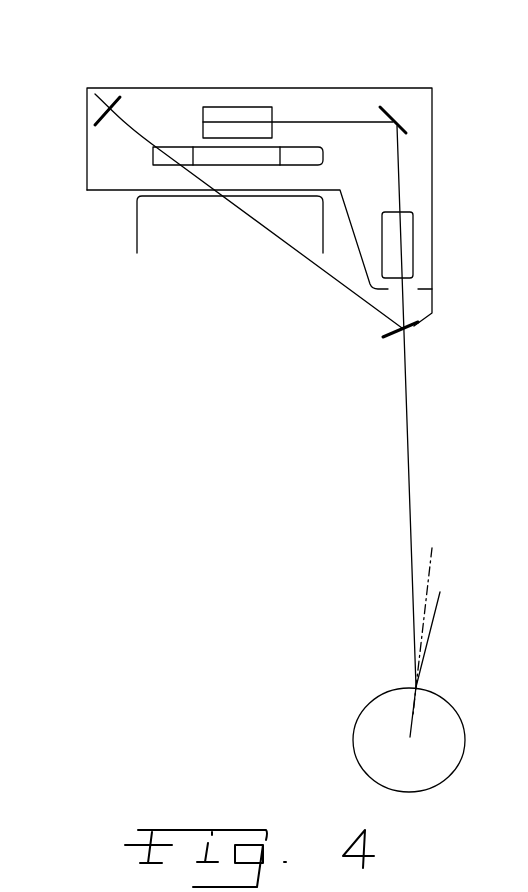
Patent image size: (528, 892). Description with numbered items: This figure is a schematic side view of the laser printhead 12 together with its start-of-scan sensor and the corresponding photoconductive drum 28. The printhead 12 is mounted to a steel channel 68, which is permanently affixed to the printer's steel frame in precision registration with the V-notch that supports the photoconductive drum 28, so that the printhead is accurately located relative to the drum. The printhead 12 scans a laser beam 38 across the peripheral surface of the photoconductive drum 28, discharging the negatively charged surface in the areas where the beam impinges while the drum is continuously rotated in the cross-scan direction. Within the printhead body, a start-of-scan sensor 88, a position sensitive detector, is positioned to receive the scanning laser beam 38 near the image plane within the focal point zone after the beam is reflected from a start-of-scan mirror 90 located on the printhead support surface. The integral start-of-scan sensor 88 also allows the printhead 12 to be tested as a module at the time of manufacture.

The laser printhead 12 is at (360, 93).
The photoconductive drum 28 is at (437, 774).
The laser beam 38 is at (408, 473).
The steel channel 68 is at (137, 233).
The start-of-scan sensor 88 is at (95, 94).
The start-of-scan mirror 90 is at (410, 329).